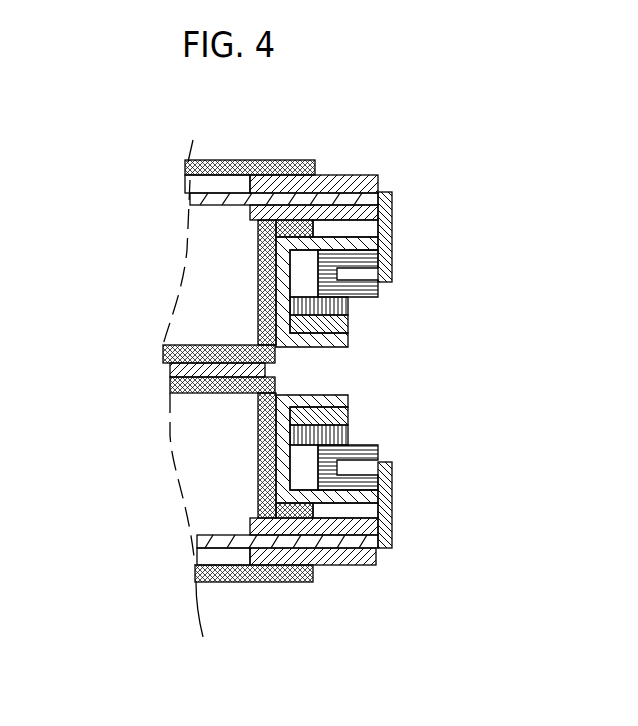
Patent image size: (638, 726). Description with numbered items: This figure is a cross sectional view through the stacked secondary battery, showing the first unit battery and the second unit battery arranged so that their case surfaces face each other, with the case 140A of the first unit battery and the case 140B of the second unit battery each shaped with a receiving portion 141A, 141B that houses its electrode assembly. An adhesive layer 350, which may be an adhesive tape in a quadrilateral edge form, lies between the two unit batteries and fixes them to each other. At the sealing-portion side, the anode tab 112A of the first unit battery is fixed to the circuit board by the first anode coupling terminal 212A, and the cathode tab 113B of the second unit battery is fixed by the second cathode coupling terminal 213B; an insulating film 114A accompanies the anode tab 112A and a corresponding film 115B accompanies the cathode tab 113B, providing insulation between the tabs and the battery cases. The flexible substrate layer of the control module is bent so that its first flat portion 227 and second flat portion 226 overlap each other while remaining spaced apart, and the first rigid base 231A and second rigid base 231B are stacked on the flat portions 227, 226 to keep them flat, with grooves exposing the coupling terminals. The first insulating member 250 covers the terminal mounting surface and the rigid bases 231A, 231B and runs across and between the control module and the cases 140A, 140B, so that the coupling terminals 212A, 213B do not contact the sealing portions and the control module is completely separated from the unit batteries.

The case of the first unit battery 140A is at (247, 158).
The case of the second unit battery 140B is at (242, 598).
The first frame side wall 141A is at (214, 269).
The second frame side wall 141B is at (214, 474).
The first intermediate plate 114A is at (379, 199).
The second intermediate plate 115B is at (355, 566).
The anode tab 112A is at (392, 234).
The cathode tab 113B is at (392, 512).
The first anode coupling terminal 212A is at (380, 292).
The second cathode coupling terminal 213B is at (380, 453).
The first flat portion 227 is at (350, 308).
The second flat portion 226 is at (350, 432).
The first rigid base 231A is at (350, 326).
The second rigid base 231B is at (350, 408).
The first insulating member 250 is at (338, 348).
The adhesive layer 350 is at (163, 366).